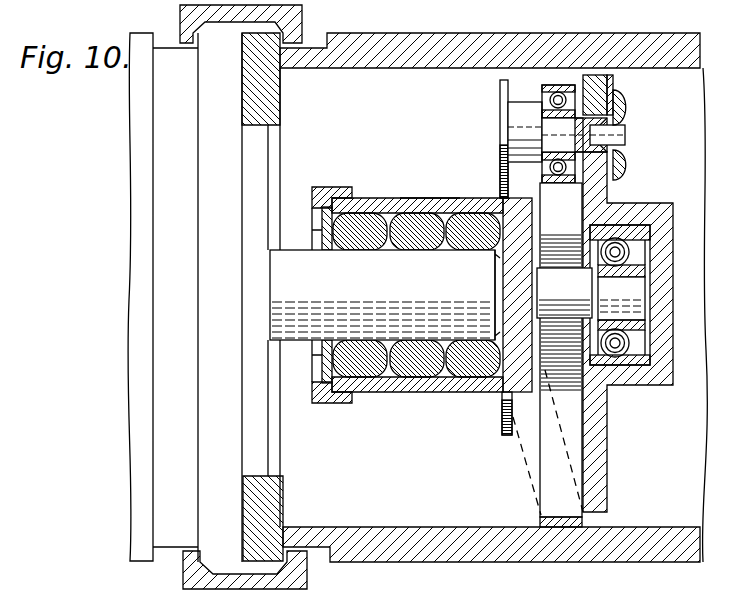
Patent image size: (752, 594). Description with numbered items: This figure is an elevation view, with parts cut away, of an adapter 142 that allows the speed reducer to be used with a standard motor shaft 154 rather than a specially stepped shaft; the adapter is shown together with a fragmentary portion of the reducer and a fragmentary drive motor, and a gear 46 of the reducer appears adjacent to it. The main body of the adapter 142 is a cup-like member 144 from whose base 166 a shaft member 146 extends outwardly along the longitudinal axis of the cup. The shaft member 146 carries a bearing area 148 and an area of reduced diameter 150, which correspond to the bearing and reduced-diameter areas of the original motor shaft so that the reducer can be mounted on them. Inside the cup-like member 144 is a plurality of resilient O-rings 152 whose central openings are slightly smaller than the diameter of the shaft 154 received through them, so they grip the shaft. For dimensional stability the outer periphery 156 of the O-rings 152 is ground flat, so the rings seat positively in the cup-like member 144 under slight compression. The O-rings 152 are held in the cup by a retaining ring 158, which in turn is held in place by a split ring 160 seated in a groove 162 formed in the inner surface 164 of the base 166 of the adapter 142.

The gear 46 is at (572, 208).
The adapter 142 is at (398, 182).
The cup-like member 144 is at (449, 393).
The shaft member 146 is at (532, 292).
The bearing area 148 is at (572, 296).
The area of reduced diameter 150 is at (620, 295).
The O-rings 152 is at (412, 393).
The shaft 154 is at (405, 287).
The outer periphery 156 is at (432, 198).
The retaining ring 158 is at (321, 242).
The split ring 160 is at (322, 371).
The groove 162 is at (334, 395).
The inner surface 164 is at (313, 204).
The base 166 is at (342, 198).